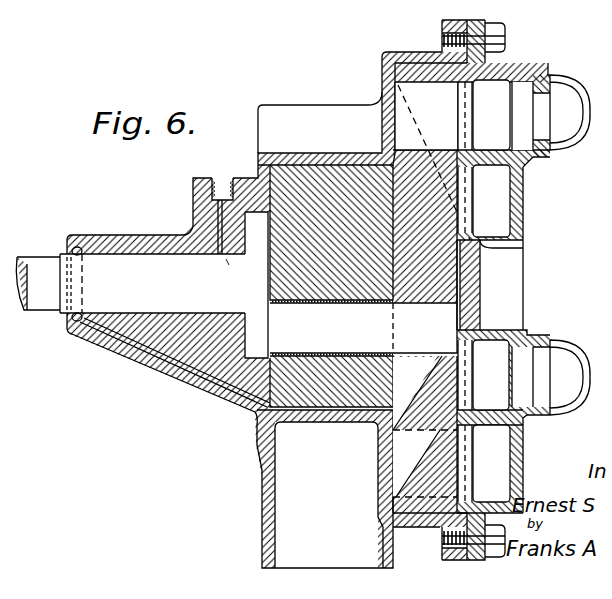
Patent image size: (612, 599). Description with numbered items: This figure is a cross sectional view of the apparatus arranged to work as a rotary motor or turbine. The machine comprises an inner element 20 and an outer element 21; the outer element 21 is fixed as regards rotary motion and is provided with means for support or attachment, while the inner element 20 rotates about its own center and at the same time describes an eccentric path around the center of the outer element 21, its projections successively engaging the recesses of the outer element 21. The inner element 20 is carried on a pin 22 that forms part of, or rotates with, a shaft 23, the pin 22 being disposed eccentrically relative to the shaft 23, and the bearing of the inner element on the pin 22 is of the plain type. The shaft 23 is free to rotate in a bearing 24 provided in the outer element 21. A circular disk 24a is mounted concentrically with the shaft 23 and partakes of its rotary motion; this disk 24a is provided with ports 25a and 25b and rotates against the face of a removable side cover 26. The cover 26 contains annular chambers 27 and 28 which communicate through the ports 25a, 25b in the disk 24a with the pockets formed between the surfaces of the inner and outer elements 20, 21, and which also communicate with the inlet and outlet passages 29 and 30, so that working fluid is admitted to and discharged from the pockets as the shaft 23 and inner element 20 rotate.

The inner element 20 is at (303, 290).
The outer element 21 is at (328, 155).
The pin 22 is at (363, 328).
The shaft 23 is at (142, 285).
The bearing 24 is at (136, 236).
The circular disk 24a is at (443, 278).
The port 25a is at (432, 161).
The port 25b is at (425, 426).
The removable side cover 26 is at (525, 216).
The annular chamber 27 is at (491, 291).
The annular chamber 28 is at (491, 287).
The inlet passage 29 is at (551, 116).
The outlet passage 30 is at (551, 377).